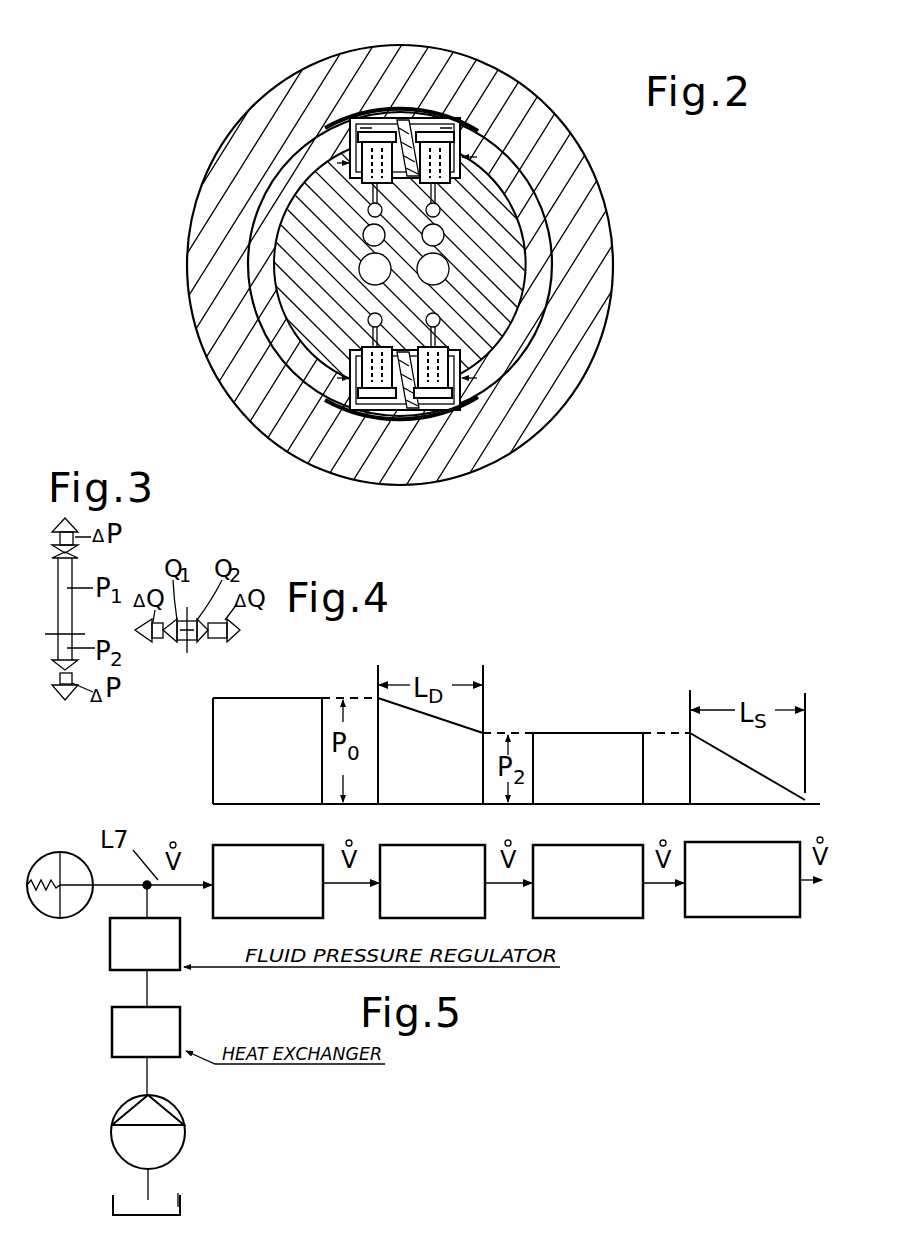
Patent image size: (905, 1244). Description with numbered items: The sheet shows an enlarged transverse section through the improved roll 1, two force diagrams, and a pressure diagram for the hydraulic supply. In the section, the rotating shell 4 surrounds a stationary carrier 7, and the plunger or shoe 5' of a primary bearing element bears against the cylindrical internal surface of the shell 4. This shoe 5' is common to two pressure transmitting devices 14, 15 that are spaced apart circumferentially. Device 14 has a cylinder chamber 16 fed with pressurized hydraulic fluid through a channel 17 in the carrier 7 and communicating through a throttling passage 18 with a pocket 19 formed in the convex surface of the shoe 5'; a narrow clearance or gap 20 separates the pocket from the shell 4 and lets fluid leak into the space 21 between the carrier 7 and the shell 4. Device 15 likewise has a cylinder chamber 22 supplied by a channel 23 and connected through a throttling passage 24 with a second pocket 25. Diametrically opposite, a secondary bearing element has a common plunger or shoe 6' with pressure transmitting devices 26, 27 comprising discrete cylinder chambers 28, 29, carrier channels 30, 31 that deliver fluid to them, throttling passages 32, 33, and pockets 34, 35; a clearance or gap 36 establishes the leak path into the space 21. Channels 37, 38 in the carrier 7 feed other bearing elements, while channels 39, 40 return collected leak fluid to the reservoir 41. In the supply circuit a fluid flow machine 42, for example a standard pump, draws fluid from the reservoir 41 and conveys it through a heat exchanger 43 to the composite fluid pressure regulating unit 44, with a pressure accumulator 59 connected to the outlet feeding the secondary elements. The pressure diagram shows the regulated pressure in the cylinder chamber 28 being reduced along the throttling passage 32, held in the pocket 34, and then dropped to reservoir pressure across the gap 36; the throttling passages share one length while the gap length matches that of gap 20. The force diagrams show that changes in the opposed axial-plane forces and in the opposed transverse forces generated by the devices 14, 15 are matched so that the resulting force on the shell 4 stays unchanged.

In FIG. 2, the roll 1 is at (567, 113).
In FIG. 2, the shell 4 is at (587, 184).
In FIG. 2, the plunger or shoe 5' is at (421, 90).
In FIG. 2, the plunger or shoe 6' is at (411, 444).
In FIG. 2, the carrier 7 is at (505, 242).
In FIG. 2, the pressure transmitting device 14 is at (348, 168).
In FIG. 2, the pressure transmitting device 15 is at (462, 160).
In FIG. 2, the cylinder chamber 16 is at (352, 135).
In FIG. 2, the channel 17 is at (367, 209).
In FIG. 2, the throttling passage 18 is at (403, 112).
In FIG. 2, the pocket 19 is at (365, 112).
In FIG. 2, the clearance or gap 20 is at (358, 122).
In FIG. 2, the space 21 is at (268, 310).
In FIG. 2, the cylinder chamber 22 is at (500, 118).
In FIG. 2, the channel 23 is at (441, 210).
In FIG. 2, the throttling passage 24 is at (440, 112).
In FIG. 2, the second pocket 25 is at (472, 110).
In FIG. 2, the pressure transmitting device 26 is at (347, 382).
In FIG. 2, the pressure transmitting device 27 is at (462, 378).
In FIG. 2, the cylinder chamber 28 is at (383, 412).
In FIG. 5, the cylinder chamber 28 is at (254, 900).
In FIG. 2, the cylinder chamber 29 is at (446, 398).
In FIG. 2, the channel 30 is at (367, 321).
In FIG. 2, the channel 31 is at (441, 322).
In FIG. 2, the throttling passage 32 is at (390, 430).
In FIG. 5, the throttling passage 32 is at (418, 900).
In FIG. 2, the throttling passage 33 is at (436, 428).
In FIG. 2, the pocket 34 is at (372, 426).
In FIG. 5, the pocket 34 is at (574, 900).
In FIG. 2, the pocket 35 is at (438, 408).
In FIG. 2, the clearance or gap 36 is at (450, 405).
In FIG. 5, the clearance or gap 36 is at (730, 900).
In FIG. 2, the channel 37 is at (363, 235).
In FIG. 2, the channel 38 is at (449, 270).
In FIG. 2, the channel 39 is at (366, 268).
In FIG. 2, the channel 40 is at (449, 277).
In FIG. 5, the reservoir 41 is at (170, 1201).
In FIG. 5, the fluid flow machine 42 is at (168, 1132).
In FIG. 5, the heat exchanger 43 is at (165, 1030).
In FIG. 5, the fluid pressure regulating unit 44 is at (165, 946).
In FIG. 5, the pressure accumulator 59 is at (72, 905).